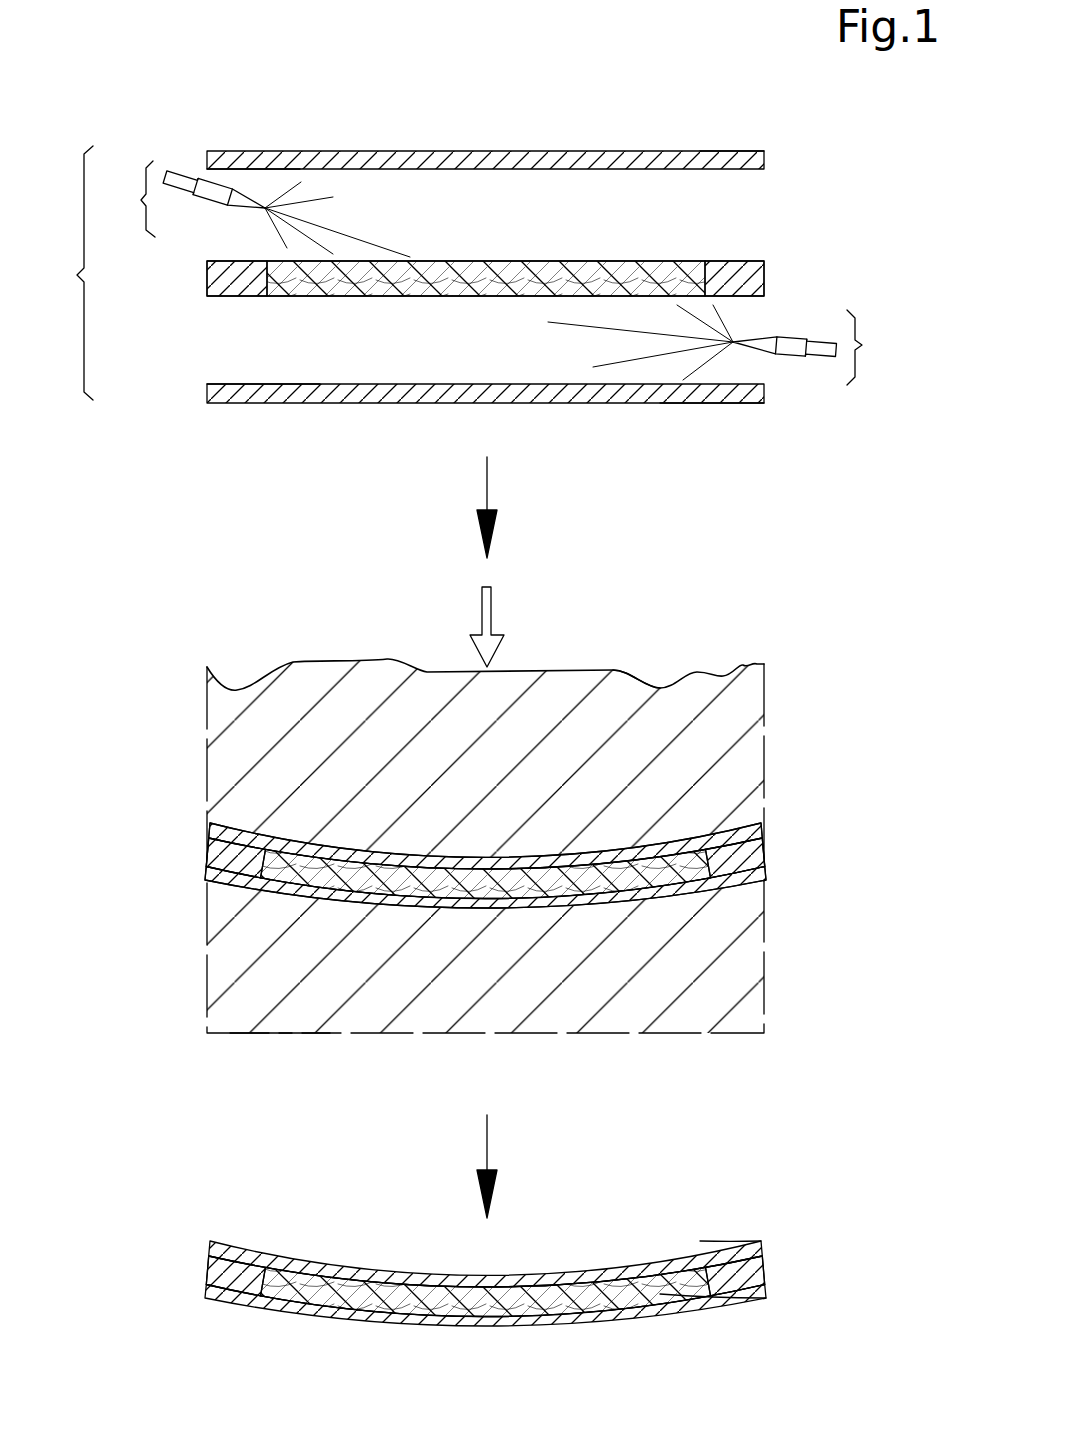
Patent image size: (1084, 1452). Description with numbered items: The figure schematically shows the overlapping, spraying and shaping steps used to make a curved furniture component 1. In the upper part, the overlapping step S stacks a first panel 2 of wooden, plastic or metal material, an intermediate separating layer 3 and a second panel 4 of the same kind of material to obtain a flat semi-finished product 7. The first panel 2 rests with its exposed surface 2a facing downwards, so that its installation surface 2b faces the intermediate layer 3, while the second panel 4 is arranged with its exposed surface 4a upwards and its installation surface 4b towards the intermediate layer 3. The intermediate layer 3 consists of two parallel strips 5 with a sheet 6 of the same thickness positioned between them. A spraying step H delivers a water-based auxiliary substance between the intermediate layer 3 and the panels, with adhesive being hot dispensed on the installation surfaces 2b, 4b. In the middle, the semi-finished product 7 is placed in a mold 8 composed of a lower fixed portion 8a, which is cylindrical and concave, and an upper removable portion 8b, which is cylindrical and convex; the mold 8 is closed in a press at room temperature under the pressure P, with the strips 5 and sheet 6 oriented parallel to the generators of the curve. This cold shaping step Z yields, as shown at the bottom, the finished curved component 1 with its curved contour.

The component 1 is at (183, 840).
The first panel 2 is at (688, 884).
The exposed surface 2a is at (690, 397).
The installation surface 2b is at (268, 385).
The intermediate separating layer 3 is at (712, 238).
The second panel 4 is at (592, 129).
The exposed surface 4a is at (700, 153).
The installation surface 4b is at (262, 160).
The strips 5 is at (232, 280).
The sheet 6 is at (478, 272).
The flat semi-finished product 7 is at (100, 62).
The mold 8 is at (186, 714).
The lower fixed portion 8a is at (275, 993).
The upper removable portion 8b is at (737, 700).
The overlapping step S is at (71, 273).
The spraying step H is at (502, 273).
The pressure P is at (495, 624).
The cold shaping step Z is at (861, 566).